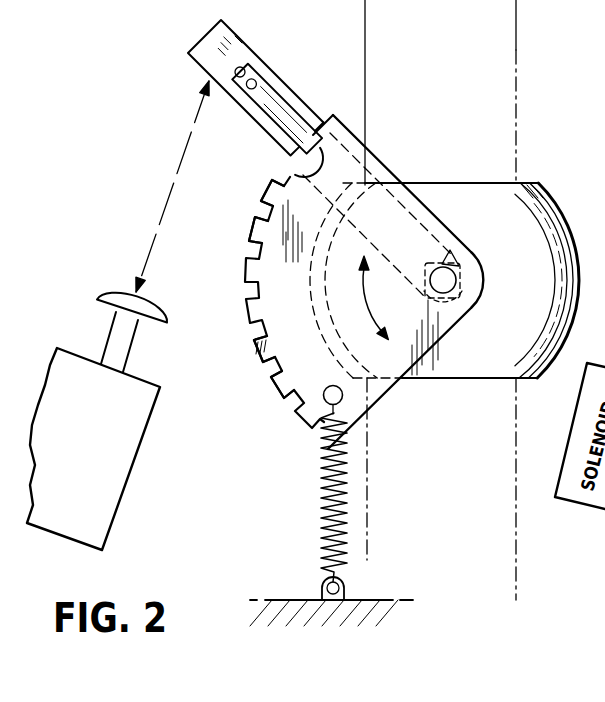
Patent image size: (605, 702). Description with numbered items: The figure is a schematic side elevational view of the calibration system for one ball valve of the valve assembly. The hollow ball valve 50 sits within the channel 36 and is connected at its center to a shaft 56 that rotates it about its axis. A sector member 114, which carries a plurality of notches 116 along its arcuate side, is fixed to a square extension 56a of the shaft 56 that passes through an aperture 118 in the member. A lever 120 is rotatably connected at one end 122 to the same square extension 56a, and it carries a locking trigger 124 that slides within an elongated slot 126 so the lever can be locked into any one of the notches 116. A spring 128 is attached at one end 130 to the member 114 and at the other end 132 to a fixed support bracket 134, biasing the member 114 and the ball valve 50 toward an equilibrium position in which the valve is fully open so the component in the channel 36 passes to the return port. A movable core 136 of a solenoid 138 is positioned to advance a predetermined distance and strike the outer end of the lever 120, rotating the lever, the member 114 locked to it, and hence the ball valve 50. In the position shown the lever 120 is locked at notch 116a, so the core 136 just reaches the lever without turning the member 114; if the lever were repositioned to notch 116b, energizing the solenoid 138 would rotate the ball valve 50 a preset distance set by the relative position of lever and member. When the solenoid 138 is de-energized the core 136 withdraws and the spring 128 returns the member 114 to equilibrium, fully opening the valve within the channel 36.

The channel 36 is at (470, 38).
The first hollow ball valve 50 is at (559, 211).
The shaft 56 is at (452, 248).
The square extension 56a is at (444, 281).
The sector member 114 is at (297, 335).
The notches 116 is at (272, 363).
The notch 116a is at (290, 178).
The notch 116b is at (262, 247).
The aperture 118 is at (459, 298).
The lever 120 is at (207, 46).
The one end 122 is at (480, 259).
The locking trigger 124 is at (276, 110).
The elongated slot 126 is at (250, 60).
The spring 128 is at (321, 499).
The one end 130 is at (324, 418).
The other end 132 is at (343, 588).
The fixed support bracket 134 is at (310, 600).
The movable core 136 is at (112, 284).
The solenoid 138 is at (107, 514).